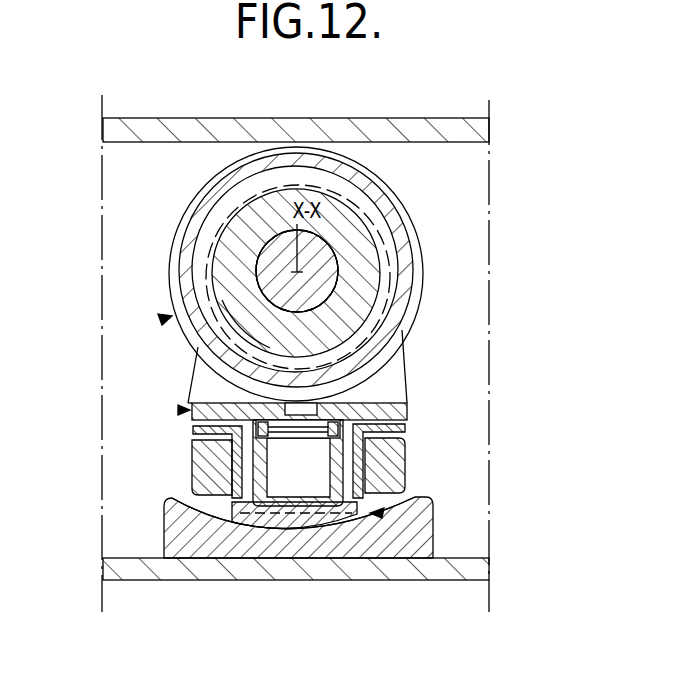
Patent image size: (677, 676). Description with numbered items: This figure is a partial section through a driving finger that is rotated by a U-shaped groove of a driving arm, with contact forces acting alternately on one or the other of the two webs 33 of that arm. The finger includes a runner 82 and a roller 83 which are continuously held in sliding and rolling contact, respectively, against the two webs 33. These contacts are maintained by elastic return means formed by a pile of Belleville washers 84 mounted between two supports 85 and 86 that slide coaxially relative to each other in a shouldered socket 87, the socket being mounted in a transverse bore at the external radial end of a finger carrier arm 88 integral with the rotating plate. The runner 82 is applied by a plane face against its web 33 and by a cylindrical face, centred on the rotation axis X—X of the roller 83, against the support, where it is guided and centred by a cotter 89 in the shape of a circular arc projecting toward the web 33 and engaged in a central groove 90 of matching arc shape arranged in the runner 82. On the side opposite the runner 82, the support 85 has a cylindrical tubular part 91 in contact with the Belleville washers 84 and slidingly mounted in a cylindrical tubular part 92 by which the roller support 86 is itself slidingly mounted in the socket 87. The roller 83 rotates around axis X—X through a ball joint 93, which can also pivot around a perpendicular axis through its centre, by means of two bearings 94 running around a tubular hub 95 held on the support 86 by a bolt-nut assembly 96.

The web 33 is at (405, 130).
The runner 82 is at (188, 538).
The roller 83 is at (165, 319).
The Belleville washers 84 is at (325, 445).
The support 85 is at (378, 512).
The support 86 is at (180, 410).
The shouldered socket 87 is at (205, 432).
The finger carrier arm 88 is at (385, 462).
The cotter 89 is at (343, 522).
The central groove 90 is at (200, 513).
The cylindrical tubular part 91 is at (298, 525).
The cylindrical tubular part 92 is at (243, 478).
The ball joint 93 is at (393, 197).
The bearings 94 is at (365, 330).
The tubular hub 95 is at (355, 297).
The bolt-nut assembly 96 is at (325, 257).